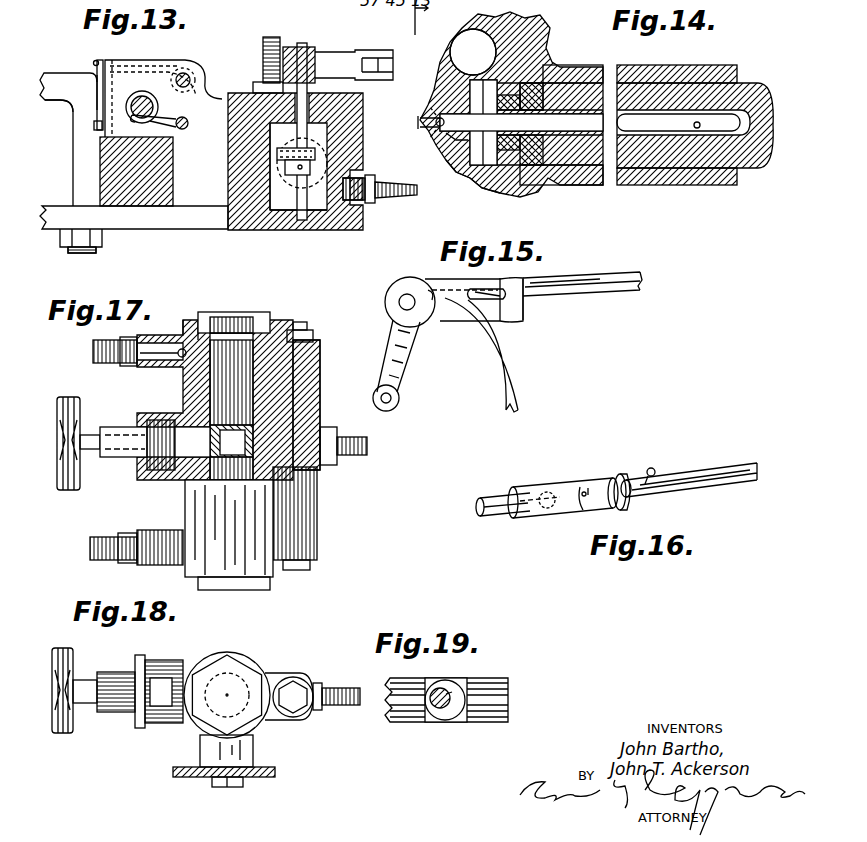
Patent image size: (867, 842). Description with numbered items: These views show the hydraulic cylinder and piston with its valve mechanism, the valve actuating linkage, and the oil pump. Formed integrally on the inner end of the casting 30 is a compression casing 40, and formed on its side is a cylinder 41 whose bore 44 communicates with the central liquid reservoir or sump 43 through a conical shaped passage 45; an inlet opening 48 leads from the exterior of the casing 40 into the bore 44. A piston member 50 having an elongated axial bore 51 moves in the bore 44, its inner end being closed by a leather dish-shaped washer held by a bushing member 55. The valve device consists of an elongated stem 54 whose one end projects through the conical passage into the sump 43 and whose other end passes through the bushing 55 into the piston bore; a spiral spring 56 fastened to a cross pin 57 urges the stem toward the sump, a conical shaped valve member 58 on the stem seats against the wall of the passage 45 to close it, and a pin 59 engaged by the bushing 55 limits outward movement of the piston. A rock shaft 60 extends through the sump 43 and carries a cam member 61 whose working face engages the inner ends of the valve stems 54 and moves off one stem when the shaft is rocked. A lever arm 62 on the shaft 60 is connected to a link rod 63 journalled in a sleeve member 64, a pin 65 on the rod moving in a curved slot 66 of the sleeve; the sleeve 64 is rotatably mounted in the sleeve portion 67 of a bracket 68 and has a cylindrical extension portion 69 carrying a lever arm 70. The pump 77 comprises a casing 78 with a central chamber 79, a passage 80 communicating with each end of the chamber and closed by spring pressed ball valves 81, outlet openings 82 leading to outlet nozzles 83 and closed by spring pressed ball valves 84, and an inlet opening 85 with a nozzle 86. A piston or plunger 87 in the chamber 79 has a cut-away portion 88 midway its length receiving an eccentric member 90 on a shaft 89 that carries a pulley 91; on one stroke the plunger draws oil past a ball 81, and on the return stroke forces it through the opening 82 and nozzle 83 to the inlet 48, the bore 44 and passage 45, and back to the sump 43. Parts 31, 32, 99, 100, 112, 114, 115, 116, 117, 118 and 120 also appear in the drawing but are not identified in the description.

In FIG. 13, the casting 30 is at (213, 100).
In FIG. 13, the support bracket 31 is at (82, 150).
In FIG. 13, the mounting block 32 is at (157, 190).
In FIG. 13, the compression casing 40 is at (240, 93).
In FIG. 14, the compression casing 40 is at (538, 32).
In FIG. 13, the cylinder 41 is at (272, 172).
In FIG. 14, the cylinder 41 is at (596, 72).
In FIG. 13, the liquid reservoir or sump 43 is at (282, 190).
In FIG. 14, the bore 44 is at (478, 190).
In FIG. 14, the conical shaped passage 45 is at (452, 133).
In FIG. 14, the inlet opening 48 is at (473, 52).
In FIG. 14, the piston member 50 is at (766, 102).
In FIG. 14, the elongated axial opening or bore 51 is at (740, 92).
In FIG. 14, the elongated stem 54 is at (440, 120).
In FIG. 14, the bushing member 55 is at (540, 96).
In FIG. 14, the spiral spring 56 is at (440, 128).
In FIG. 14, the cross pin 57 is at (440, 113).
In FIG. 14, the conical shaped valve member 58 is at (466, 176).
In FIG. 14, the pin 59 is at (700, 121).
In FIG. 13, the rock shaft 60 is at (304, 44).
In FIG. 13, the cam member 61 is at (277, 154).
In FIG. 14, the cam member 61 is at (434, 123).
In FIG. 13, the lever arm 62 is at (335, 62).
In FIG. 15, the link rod 63 is at (590, 292).
In FIG. 16, the link rod 63 is at (700, 468).
In FIG. 16, the sleeve member 64 is at (545, 487).
In FIG. 16, the pin 65 is at (651, 468).
In FIG. 15, the curved slot 66 is at (487, 294).
In FIG. 16, the curved slot 66 is at (584, 490).
In FIG. 15, the sleeve portion 67 is at (446, 279).
In FIG. 15, the bracket 68 is at (503, 360).
In FIG. 15, the cylindrical extension portion 69 is at (399, 302).
In FIG. 16, the cylindrical extension portion 69 is at (488, 498).
In FIG. 15, the lever arm 70 is at (393, 336).
In FIG. 17, the pump 77 is at (320, 512).
In FIG. 18, the pump 77 is at (248, 665).
In FIG. 17, the casing 78 is at (222, 577).
In FIG. 18, the casing 78 is at (150, 726).
In FIG. 17, the central chamber 79 is at (222, 332).
In FIG. 17, the passage 80 is at (322, 385).
In FIG. 17, the spring pressed ball valve 81 is at (297, 330).
In FIG. 17, the outlet opening 82 is at (205, 345).
In FIG. 17, the outlet nozzle 83 is at (120, 363).
In FIG. 17, the spring pressed ball valve 84 is at (182, 366).
In FIG. 17, the inlet opening 85 is at (320, 466).
In FIG. 17, the nozzle 86 is at (348, 451).
In FIG. 18, the nozzle 86 is at (348, 708).
In FIG. 17, the piston or plunger 87 is at (226, 393).
In FIG. 19, the piston or plunger 87 is at (498, 722).
In FIG. 17, the cut-away portion 88 is at (236, 432).
In FIG. 19, the cut-away portion 88 is at (425, 721).
In FIG. 17, the shaft 89 is at (100, 438).
In FIG. 18, the shaft 89 is at (95, 710).
In FIG. 19, the shaft 89 is at (441, 710).
In FIG. 17, the eccentric member 90 is at (268, 472).
In FIG. 19, the eccentric member 90 is at (455, 714).
In FIG. 17, the pulley 91 is at (60, 420).
In FIG. 18, the pulley 91 is at (55, 672).
In FIG. 13, the pivot pin 99 is at (132, 98).
In FIG. 13, the lever 100 is at (135, 105).
In FIG. 13, the stop pin 112 is at (188, 124).
In FIG. 13, the plate 114 is at (142, 62).
In FIG. 13, the pin 115 is at (185, 72).
In FIG. 13, the rod 116 is at (97, 78).
In FIG. 13, the pin 117 is at (94, 125).
In FIG. 13, the arm 118 is at (95, 118).
In FIG. 13, the bar 120 is at (98, 62).